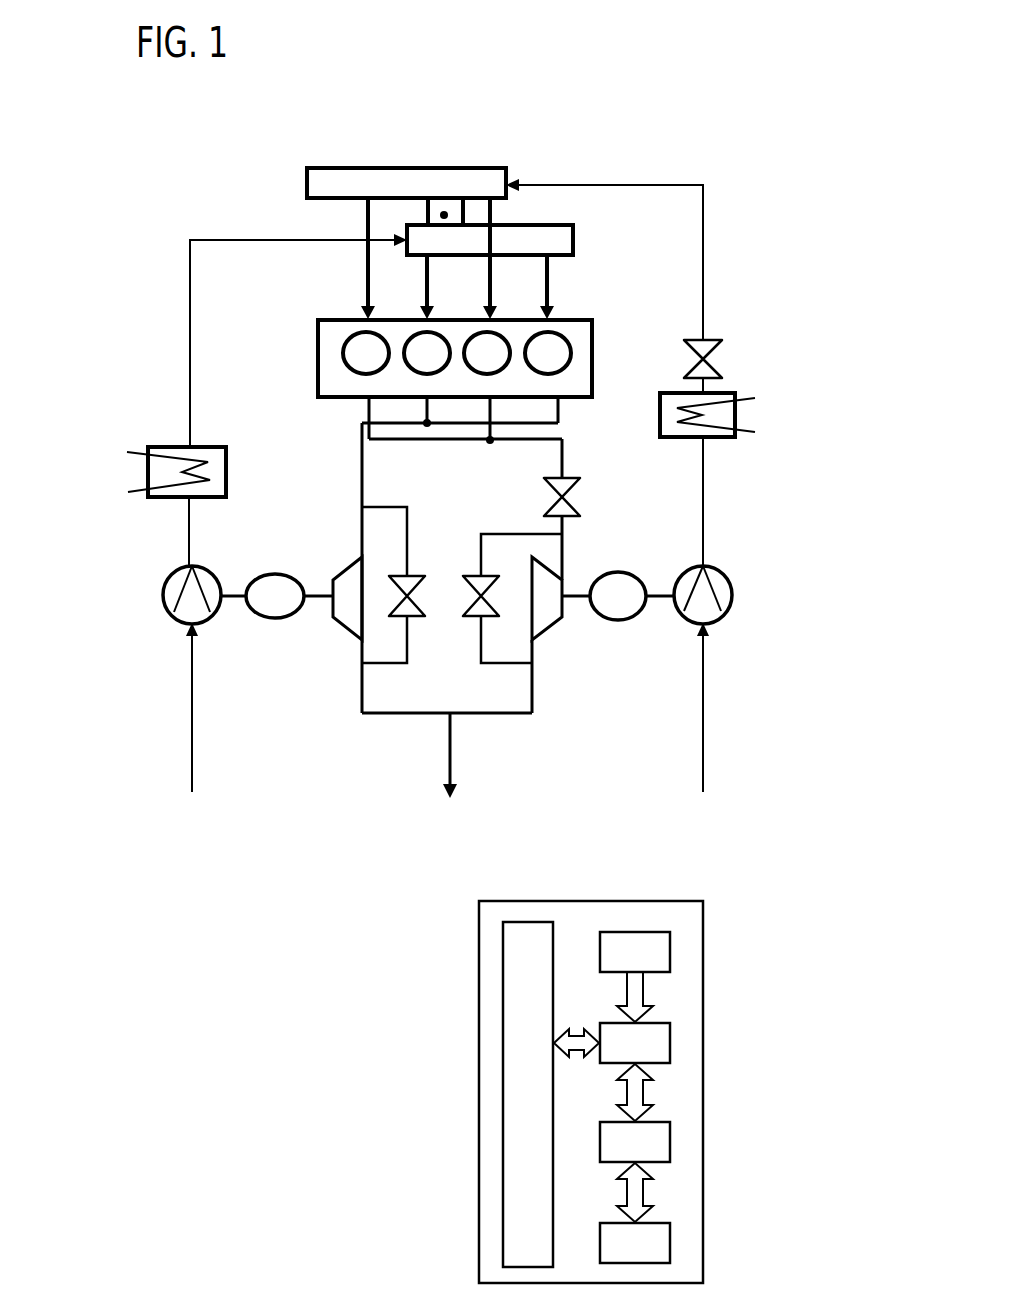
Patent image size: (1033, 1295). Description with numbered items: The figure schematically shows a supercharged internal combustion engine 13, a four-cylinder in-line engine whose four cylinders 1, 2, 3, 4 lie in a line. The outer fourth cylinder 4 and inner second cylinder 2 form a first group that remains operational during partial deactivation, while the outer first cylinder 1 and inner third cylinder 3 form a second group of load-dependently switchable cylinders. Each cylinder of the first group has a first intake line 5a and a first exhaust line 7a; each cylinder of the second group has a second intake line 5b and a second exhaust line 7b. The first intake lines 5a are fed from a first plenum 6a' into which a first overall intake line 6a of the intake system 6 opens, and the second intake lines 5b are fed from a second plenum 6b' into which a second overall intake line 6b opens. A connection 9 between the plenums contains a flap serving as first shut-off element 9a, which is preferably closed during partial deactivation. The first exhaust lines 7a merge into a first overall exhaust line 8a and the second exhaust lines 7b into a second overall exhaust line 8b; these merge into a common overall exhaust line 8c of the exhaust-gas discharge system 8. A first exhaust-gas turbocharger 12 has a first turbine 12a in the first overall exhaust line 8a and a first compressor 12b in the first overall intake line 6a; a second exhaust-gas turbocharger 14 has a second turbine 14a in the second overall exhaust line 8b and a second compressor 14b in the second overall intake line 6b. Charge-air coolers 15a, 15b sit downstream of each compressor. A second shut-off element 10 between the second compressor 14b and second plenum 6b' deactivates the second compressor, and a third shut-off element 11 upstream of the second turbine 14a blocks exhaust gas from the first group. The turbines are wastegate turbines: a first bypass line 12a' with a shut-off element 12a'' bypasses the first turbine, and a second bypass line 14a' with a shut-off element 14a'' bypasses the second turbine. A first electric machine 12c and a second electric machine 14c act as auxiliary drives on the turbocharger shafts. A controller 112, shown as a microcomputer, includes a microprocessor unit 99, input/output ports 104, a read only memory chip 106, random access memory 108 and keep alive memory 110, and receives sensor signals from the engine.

The first cylinder 1 is at (366, 353).
The second cylinder 2 is at (427, 353).
The third cylinder 3 is at (487, 353).
The fourth cylinder 4 is at (548, 353).
The first intake line 5a is at (429, 290).
The second intake line 5b is at (366, 282).
The intake system 6 is at (110, 520).
The first overall intake line 6a is at (238, 513).
The second overall intake line 6b is at (665, 485).
The first plenum 6a' is at (535, 233).
The second plenum 6b' is at (367, 164).
The first exhaust line 7a is at (428, 414).
The second exhaust line 7b is at (367, 410).
The exhaust-gas discharge system 8 is at (481, 579).
The first overall exhaust line 8a is at (360, 452).
The second overall exhaust line 8b is at (561, 453).
The common overall exhaust line 8c is at (452, 742).
The connection 9 is at (440, 215).
The first shut-off element 9a is at (446, 212).
The second shut-off element 10 is at (708, 350).
The third shut-off element 11 is at (570, 492).
The first exhaust-gas turbocharger 12 is at (289, 577).
The first turbine 12a is at (332, 620).
The first bypass line 12a' is at (400, 606).
The shut-off element 12a'' is at (426, 614).
The first compressor 12b is at (167, 613).
The first electric machine 12c is at (253, 618).
The internal combustion engine 13 is at (648, 136).
The second exhaust-gas turbocharger 14 is at (633, 572).
The second turbine 14a is at (565, 617).
The second bypass line 14a' is at (507, 619).
The shut-off element 14a'' is at (458, 563).
The second compressor 14b is at (737, 593).
The second electric machine 14c is at (625, 612).
The charge-air cooler 15a is at (175, 450).
The charge-air cooler 15b is at (737, 418).
The microprocessor unit 99 is at (672, 1037).
The input/output ports 104 is at (555, 932).
The read only memory chip 106 is at (672, 950).
The random access memory 108 is at (672, 1140).
The keep alive memory 110 is at (672, 1240).
The controller 112 is at (690, 902).